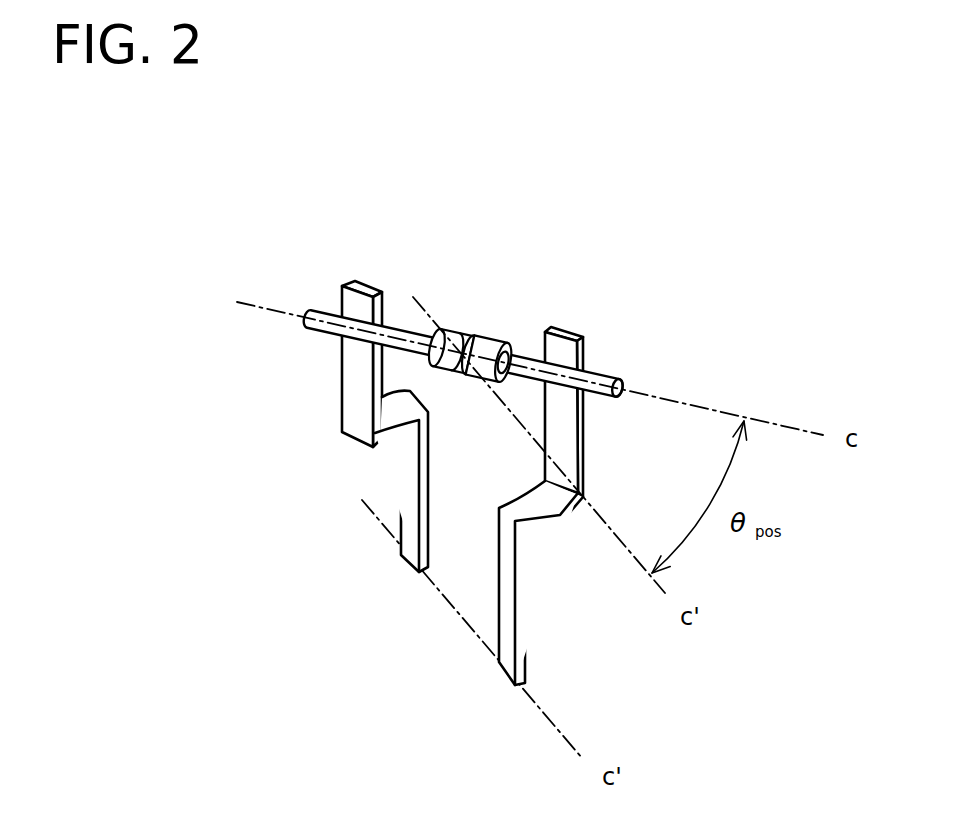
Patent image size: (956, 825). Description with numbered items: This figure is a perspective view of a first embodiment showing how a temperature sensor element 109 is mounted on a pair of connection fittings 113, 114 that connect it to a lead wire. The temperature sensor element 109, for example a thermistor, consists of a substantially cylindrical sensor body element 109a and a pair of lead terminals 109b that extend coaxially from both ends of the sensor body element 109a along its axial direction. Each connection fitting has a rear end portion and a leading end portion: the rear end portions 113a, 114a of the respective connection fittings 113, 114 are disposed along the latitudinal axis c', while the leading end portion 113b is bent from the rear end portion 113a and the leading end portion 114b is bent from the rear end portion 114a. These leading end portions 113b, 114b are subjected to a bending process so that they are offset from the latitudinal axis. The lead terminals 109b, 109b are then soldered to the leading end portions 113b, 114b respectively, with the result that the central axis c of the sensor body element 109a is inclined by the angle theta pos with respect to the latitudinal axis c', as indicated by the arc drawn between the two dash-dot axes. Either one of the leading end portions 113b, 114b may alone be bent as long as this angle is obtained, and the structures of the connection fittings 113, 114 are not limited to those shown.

The temperature sensor element 109 is at (683, 235).
The sensor body element 109a is at (476, 335).
The lead terminals 109b is at (325, 314).
The connection fitting 113 is at (178, 403).
The rear end portion 113a is at (410, 470).
The leading end portion 113b is at (362, 405).
The connection fitting 114 is at (727, 662).
The rear end portion 114a is at (527, 617).
The leading end portion 114b is at (572, 434).